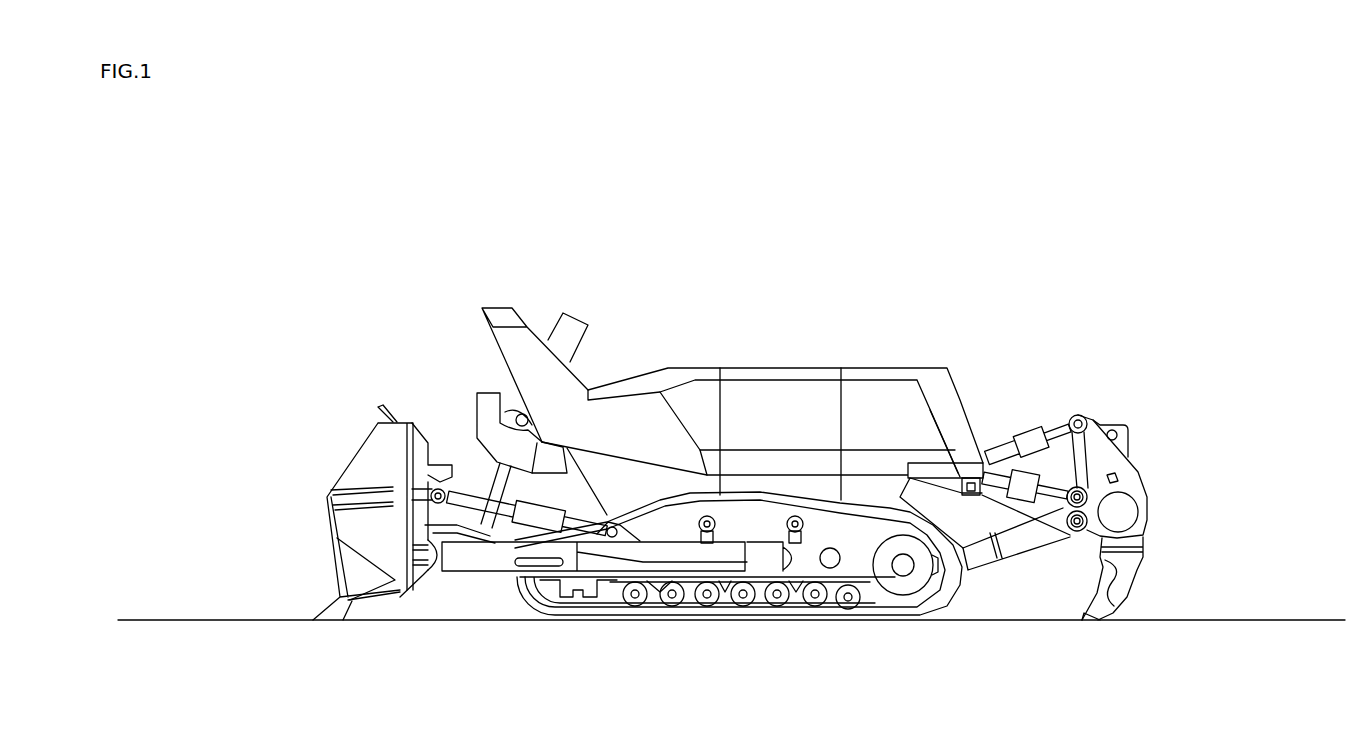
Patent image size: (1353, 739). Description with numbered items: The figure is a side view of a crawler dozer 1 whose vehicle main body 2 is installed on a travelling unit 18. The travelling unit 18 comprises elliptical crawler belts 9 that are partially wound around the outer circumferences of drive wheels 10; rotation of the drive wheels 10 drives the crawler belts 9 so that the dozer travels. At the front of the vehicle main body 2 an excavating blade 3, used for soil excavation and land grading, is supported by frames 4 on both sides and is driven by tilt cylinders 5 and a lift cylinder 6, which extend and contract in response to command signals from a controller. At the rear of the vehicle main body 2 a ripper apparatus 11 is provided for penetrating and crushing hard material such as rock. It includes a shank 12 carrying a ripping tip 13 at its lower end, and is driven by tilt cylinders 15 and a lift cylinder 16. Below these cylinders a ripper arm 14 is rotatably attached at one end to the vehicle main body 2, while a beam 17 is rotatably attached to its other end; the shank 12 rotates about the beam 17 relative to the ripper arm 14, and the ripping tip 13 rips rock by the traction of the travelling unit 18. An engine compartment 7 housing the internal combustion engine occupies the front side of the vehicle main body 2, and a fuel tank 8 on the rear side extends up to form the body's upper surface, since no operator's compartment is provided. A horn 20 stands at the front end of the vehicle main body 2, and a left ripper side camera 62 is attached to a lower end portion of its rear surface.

The crawler dozer 1 is at (927, 236).
The vehicle main body 2 is at (792, 405).
The excavating blade 3 is at (382, 460).
The frame 4 is at (500, 557).
The tilt cylinder 5 is at (490, 508).
The lift cylinder 6 is at (570, 343).
The engine compartment 7 is at (687, 400).
The fuel tank 8 is at (950, 405).
The crawler belt 9 is at (737, 613).
The drive wheel 10 is at (903, 592).
The ripper apparatus 11 is at (1149, 417).
The shank 12 is at (1130, 562).
The ripping tip 13 is at (1088, 622).
The ripper arm 14 is at (1023, 543).
The tilt cylinder 15 is at (1037, 442).
The lift cylinder 16 is at (1050, 482).
The beam 17 is at (1122, 512).
The travelling unit 18 is at (802, 608).
The horn 20 is at (535, 380).
The left ripper side camera 62 is at (971, 497).